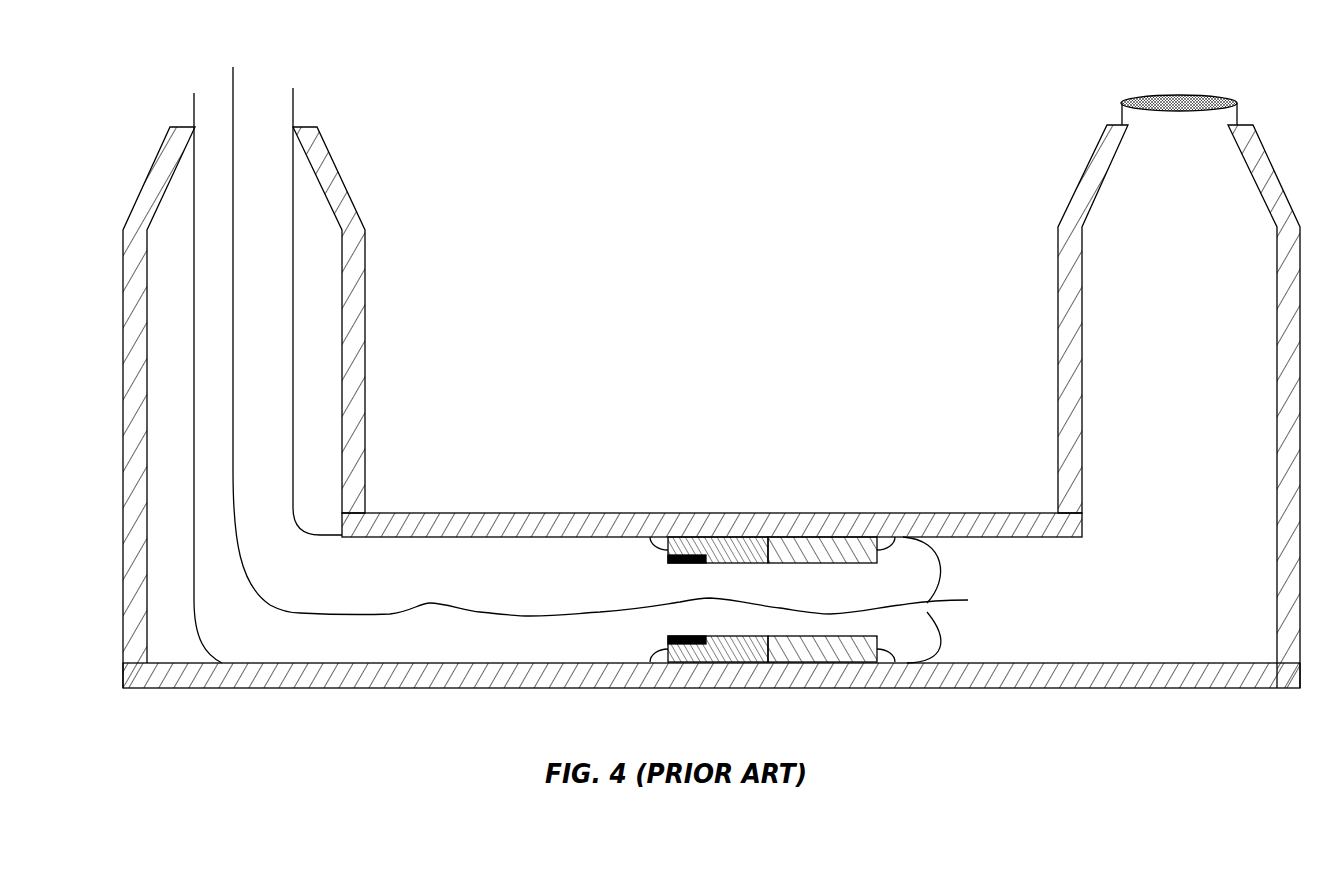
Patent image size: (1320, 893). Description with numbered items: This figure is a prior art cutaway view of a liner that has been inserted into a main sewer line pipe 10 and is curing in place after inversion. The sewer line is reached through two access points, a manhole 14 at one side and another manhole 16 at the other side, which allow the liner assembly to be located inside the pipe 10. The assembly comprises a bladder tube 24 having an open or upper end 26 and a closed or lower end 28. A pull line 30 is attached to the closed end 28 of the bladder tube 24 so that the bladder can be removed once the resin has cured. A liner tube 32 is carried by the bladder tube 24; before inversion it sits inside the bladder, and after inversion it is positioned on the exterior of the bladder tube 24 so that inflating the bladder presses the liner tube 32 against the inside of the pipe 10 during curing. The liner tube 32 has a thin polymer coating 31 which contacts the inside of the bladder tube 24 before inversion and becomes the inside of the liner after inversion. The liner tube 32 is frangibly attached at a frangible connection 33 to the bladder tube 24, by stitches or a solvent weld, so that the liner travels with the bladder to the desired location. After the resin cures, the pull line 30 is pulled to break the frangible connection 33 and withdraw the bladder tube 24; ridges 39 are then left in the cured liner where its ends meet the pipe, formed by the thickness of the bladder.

The pipe 10 is at (1040, 513).
The manhole 14 is at (130, 283).
The manhole 16 is at (1065, 290).
The bladder tube 24 is at (282, 377).
The open end of the bladder tube 26 is at (213, 90).
The closed end of the bladder tube 28 is at (927, 603).
The pull line 30 is at (236, 83).
The coating 31 is at (768, 555).
The liner tube 32 is at (817, 545).
The frangible connection 33 is at (693, 557).
The ridges 39 is at (655, 545).